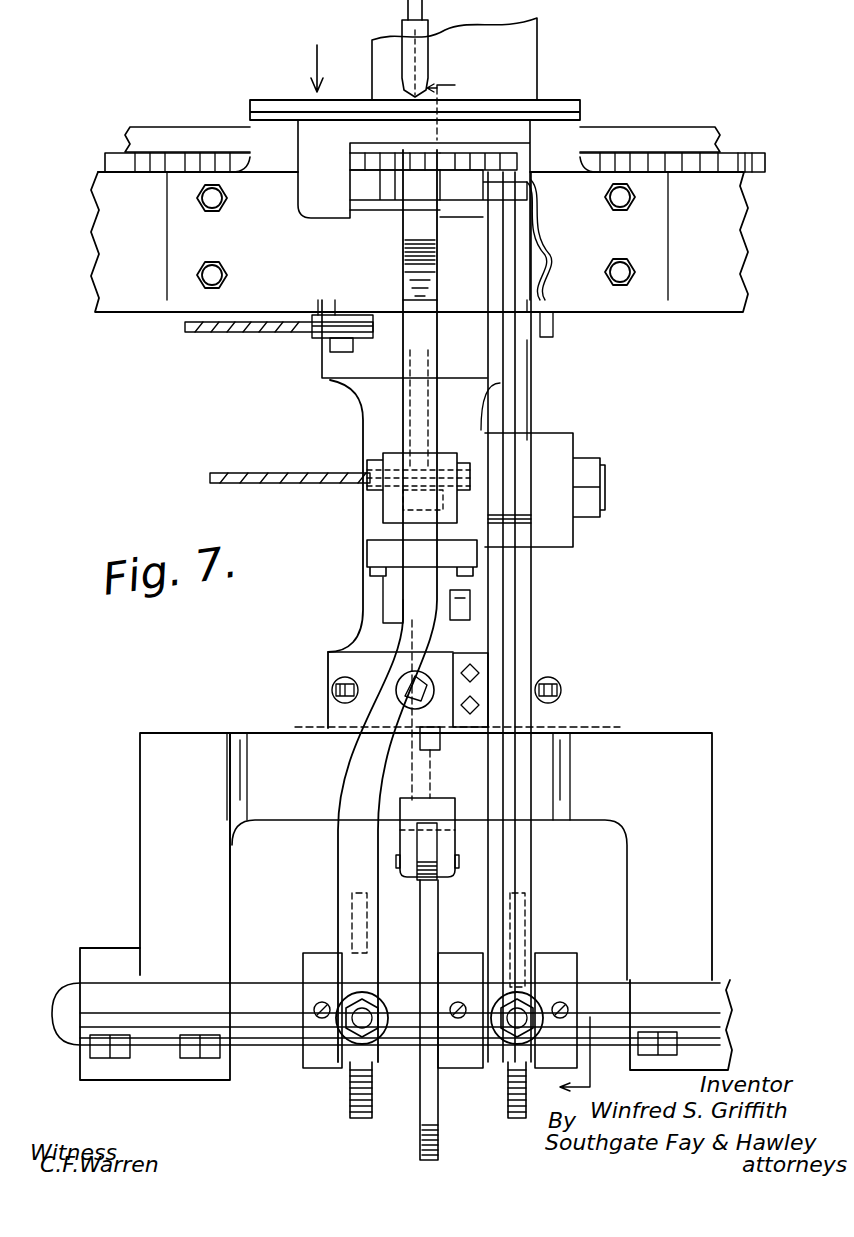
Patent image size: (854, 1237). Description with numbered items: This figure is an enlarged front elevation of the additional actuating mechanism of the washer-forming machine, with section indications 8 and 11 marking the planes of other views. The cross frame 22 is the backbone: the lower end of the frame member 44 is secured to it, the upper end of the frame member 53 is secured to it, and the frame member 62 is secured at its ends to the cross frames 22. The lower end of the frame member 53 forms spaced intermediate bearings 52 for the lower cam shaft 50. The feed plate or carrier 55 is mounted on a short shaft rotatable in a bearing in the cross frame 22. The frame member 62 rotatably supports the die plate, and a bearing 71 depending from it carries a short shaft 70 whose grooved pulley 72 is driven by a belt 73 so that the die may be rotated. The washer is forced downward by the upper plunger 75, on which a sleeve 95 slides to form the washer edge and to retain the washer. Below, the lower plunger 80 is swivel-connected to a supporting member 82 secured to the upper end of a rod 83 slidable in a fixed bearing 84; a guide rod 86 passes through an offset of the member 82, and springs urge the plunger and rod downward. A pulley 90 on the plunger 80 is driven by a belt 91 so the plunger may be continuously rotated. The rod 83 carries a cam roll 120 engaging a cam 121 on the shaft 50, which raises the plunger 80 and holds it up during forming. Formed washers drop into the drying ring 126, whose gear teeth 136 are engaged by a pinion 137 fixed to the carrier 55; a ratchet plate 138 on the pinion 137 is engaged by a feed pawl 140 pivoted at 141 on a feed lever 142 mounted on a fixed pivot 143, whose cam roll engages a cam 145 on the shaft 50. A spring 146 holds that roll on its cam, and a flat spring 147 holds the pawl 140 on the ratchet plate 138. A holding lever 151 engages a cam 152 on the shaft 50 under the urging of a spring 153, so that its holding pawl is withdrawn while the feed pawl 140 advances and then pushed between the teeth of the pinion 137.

The section line 8- 8 is at (514, 583).
The direction arrow 11 is at (330, 68).
The cross frame 22 is at (700, 300).
The frame member 44 is at (537, 68).
The lower cam shaft 50 is at (270, 972).
The spaced intermediate bearings 52 is at (150, 1080).
The frame member 53 is at (363, 605).
The feed plate or carrier 55 is at (260, 100).
The frame member 62 is at (200, 127).
The short shaft 70 is at (342, 352).
The bearing 71 is at (312, 312).
The grooved pulley 72 is at (316, 338).
The belt 73 is at (240, 332).
The upper plunger 75 is at (422, 14).
The lower plunger 80 is at (437, 405).
The supporting member 82 is at (395, 600).
The supporting rod 83 is at (430, 770).
The fixed bearing 84 is at (457, 653).
The guide rod 86 is at (452, 738).
The pulley 90 is at (383, 460).
The belt 91 is at (305, 473).
The sleeve 95 is at (428, 48).
The cam roll 120 is at (425, 840).
The cam 121 is at (450, 905).
The conveyer plate or drying ring 126 is at (745, 153).
The gear teeth 136 is at (130, 172).
The pinion 137 is at (352, 163).
The ratchet plate 138 is at (352, 190).
The feed pawl 140 is at (515, 190).
The pivot 141 is at (508, 170).
The feed lever 142 is at (531, 383).
The fixed pivot 143 is at (600, 487).
The cam 145 is at (508, 1078).
The spring 146 is at (555, 680).
The flat spring 147 is at (545, 255).
The holding lever 151 is at (400, 230).
The cam 152 is at (350, 1095).
The spring 153 is at (332, 698).